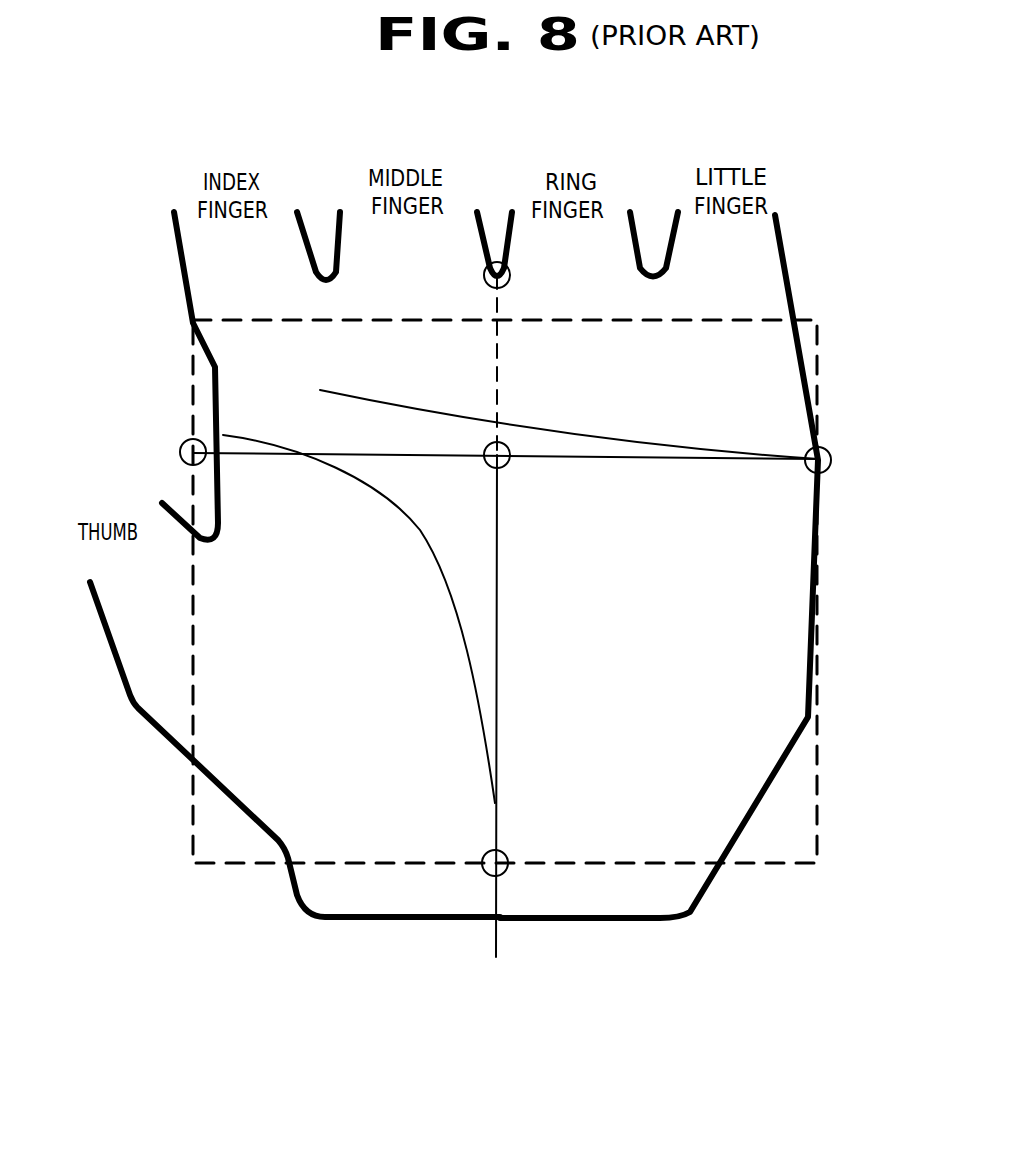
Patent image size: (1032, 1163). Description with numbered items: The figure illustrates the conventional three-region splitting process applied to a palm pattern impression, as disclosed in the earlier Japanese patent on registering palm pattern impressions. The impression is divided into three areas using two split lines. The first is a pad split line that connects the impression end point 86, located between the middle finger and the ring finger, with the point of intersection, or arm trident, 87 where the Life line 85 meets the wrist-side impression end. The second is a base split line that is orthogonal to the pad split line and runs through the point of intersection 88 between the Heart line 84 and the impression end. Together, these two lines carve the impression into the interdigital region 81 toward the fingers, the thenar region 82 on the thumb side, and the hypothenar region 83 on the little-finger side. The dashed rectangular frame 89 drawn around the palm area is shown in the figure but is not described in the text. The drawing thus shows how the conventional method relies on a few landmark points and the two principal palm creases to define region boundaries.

The interdigital region 81 is at (278, 335).
The thenar region 82 is at (305, 740).
The hypothenar region 83 is at (685, 702).
The Heart line 84 is at (383, 400).
The Life line 85 is at (435, 547).
The impression end point 86 is at (510, 256).
The point of intersection (arm trident) 87 is at (503, 852).
The point of intersection 88 is at (820, 447).
The palm region frame 89 is at (818, 365).